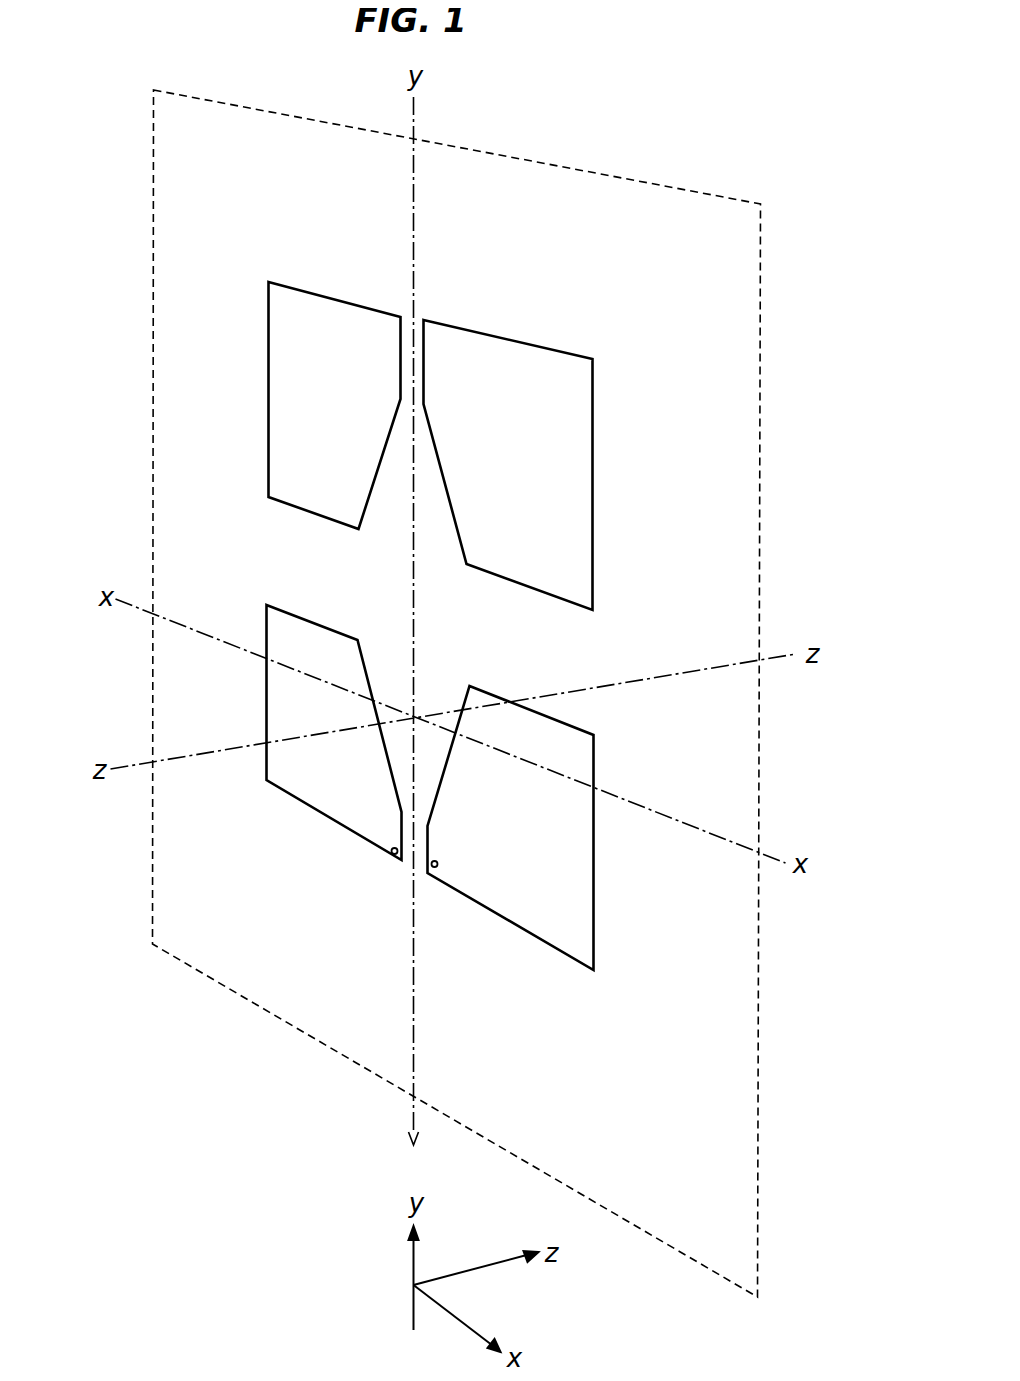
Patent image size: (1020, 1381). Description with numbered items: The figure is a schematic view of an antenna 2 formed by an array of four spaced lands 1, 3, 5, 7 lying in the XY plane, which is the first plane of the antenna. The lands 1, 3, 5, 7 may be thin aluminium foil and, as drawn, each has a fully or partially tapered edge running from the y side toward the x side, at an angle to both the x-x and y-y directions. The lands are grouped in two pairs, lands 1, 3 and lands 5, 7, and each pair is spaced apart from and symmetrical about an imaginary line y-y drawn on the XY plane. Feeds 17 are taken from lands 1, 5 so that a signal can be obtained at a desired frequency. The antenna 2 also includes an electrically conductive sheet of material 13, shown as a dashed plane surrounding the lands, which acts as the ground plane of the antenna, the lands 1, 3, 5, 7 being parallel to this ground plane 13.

The land 1 is at (312, 291).
The antenna 2 is at (147, 161).
The land 3 is at (527, 342).
The land 5 is at (282, 629).
The land 7 is at (574, 922).
The electrically conductive sheet of material 13 is at (760, 503).
The feeds 17 is at (394, 851).